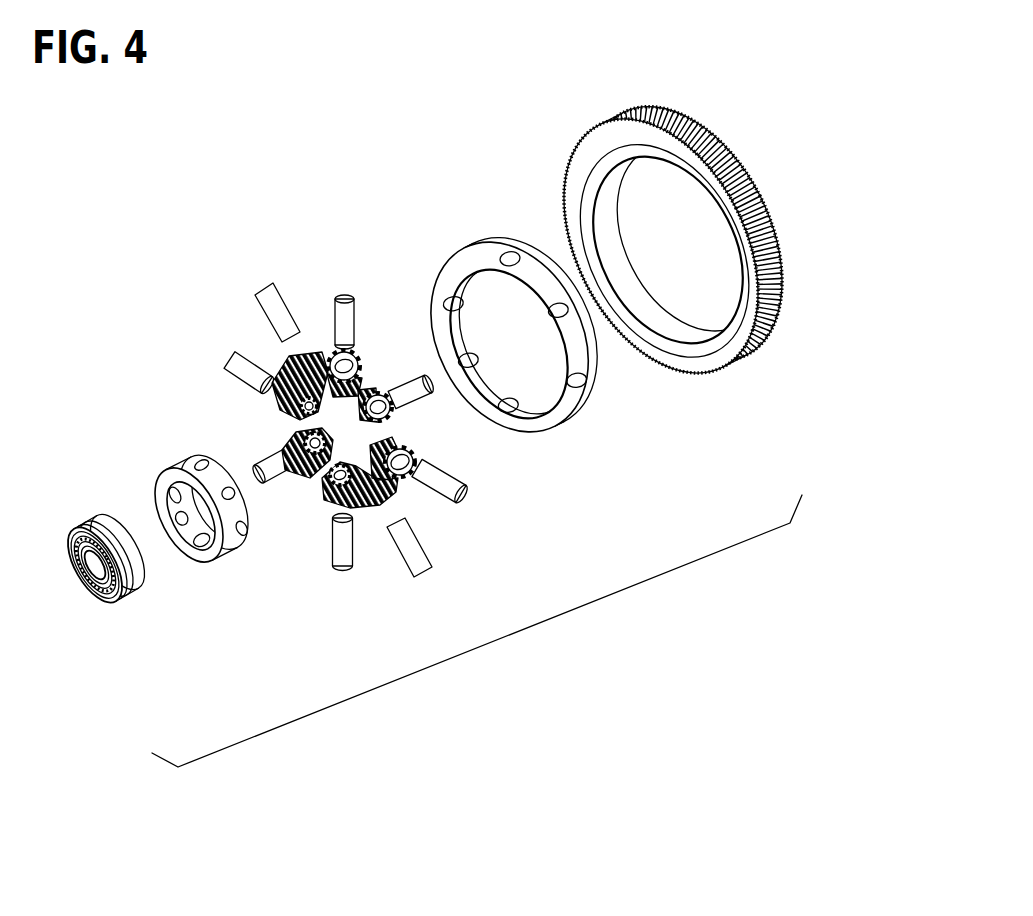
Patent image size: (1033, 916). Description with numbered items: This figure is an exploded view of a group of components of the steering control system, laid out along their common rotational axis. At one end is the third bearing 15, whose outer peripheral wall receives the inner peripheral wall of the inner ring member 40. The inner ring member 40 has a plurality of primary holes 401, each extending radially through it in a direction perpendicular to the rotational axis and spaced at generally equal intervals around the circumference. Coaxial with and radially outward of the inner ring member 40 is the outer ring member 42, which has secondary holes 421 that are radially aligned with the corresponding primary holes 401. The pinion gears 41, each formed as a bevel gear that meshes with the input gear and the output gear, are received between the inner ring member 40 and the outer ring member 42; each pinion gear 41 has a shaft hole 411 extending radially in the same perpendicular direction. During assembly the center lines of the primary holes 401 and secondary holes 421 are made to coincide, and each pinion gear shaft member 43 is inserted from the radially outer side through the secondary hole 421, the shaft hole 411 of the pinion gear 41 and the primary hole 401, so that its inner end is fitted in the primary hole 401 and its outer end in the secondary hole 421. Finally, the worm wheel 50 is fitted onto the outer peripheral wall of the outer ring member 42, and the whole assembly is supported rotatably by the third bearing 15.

The third bearing 15 is at (132, 598).
The inner ring member 40 is at (207, 549).
The primary hole 401 is at (247, 540).
The pinion gear 41 is at (395, 472).
The shaft hole 411 is at (405, 461).
The outer ring member 42 is at (514, 359).
The secondary hole 421 is at (580, 391).
The pinion gear shaft member 43 is at (407, 566).
The worm wheel 50 is at (724, 376).